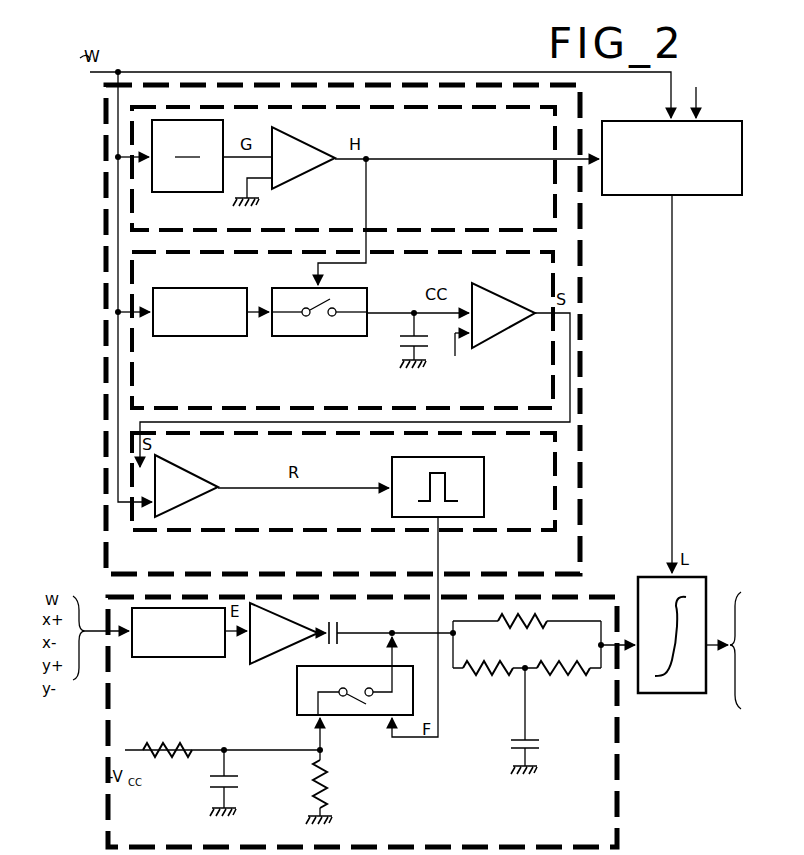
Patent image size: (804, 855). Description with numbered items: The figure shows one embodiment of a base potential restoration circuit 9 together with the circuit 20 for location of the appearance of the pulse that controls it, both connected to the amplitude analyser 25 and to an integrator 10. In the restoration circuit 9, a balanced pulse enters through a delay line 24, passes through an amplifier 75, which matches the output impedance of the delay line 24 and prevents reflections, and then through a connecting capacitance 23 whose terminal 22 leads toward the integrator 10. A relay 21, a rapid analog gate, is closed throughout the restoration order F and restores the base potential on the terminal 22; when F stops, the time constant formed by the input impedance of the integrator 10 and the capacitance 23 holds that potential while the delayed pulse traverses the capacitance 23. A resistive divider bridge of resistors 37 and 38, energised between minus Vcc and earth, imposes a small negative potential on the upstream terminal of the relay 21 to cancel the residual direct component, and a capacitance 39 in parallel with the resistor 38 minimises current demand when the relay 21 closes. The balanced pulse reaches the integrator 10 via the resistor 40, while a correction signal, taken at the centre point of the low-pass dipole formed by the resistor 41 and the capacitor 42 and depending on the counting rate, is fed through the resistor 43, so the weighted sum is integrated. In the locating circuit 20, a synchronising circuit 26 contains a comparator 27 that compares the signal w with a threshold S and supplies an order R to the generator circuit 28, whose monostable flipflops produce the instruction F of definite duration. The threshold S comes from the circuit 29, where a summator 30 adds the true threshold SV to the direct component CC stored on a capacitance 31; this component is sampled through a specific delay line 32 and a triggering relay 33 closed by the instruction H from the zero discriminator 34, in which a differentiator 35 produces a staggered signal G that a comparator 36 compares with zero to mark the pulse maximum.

The base potential restoration circuit 9 is at (617, 755).
The integrator 10 is at (700, 594).
The circuit for location of the appearance of the pulse 20 is at (580, 514).
The relay 21 is at (400, 672).
The terminal 22 is at (394, 632).
The capacitance 23 is at (340, 628).
The delay line 24 is at (212, 660).
The amplitude analyser 25 is at (714, 124).
The synchronising circuit 26 is at (555, 466).
The comparator 27 is at (226, 482).
The circuit for generating the instruction F 28 is at (484, 476).
The circuit for generating the threshold 29 is at (553, 286).
The summator 30 is at (508, 308).
The capacitance 31 is at (402, 344).
The specific delay line 32 is at (240, 288).
The triggering relay 33 is at (366, 270).
The zero discriminator circuit 34 is at (555, 222).
The differentiator 35 is at (208, 190).
The comparator 36 is at (298, 180).
The resistor 37 is at (182, 736).
The resistor 38 is at (330, 786).
The capacitance 39 is at (238, 768).
The resistor 40 is at (540, 626).
The resistor 41 is at (472, 678).
The capacitor 42 is at (540, 744).
The resistor 43 is at (566, 678).
The amplifier 75 is at (268, 652).